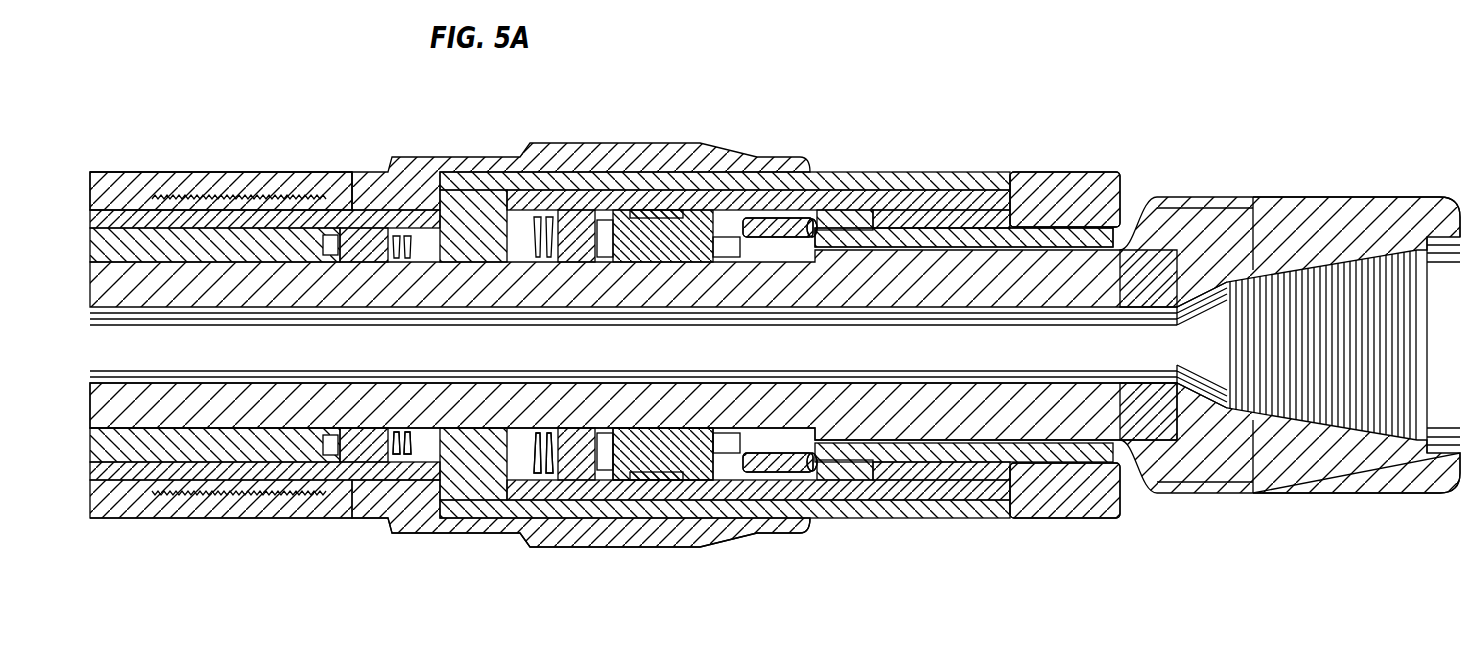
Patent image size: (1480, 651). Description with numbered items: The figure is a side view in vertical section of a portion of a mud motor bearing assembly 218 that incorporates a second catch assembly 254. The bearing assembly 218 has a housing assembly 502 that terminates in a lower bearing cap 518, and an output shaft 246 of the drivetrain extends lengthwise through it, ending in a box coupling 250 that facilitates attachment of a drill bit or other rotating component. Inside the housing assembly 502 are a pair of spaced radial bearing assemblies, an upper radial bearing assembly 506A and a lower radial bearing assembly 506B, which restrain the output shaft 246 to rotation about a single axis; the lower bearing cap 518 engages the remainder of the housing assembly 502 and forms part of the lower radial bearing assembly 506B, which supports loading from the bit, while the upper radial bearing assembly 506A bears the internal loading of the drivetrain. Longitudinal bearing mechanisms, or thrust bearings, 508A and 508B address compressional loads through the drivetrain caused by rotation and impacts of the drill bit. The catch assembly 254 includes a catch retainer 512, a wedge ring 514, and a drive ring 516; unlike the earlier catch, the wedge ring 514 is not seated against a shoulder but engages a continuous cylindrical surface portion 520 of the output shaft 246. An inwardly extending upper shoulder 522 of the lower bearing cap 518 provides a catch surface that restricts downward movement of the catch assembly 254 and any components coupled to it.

The mud motor bearing assembly 218 is at (615, 117).
The upper radial bearing assembly 506A is at (225, 228).
The continuous cylindrical surface portion 520 is at (747, 222).
The catch assembly 254 is at (810, 212).
The inwardly extending upper shoulder 522 is at (833, 215).
The lower bearing cap 518 is at (1068, 192).
The box coupling 250 is at (1343, 218).
The wedge ring 514 is at (777, 445).
The longitudinal bearing mechanism 508A is at (405, 455).
The housing assembly 502 is at (492, 507).
The longitudinal bearing mechanism 508B is at (545, 470).
The catch retainer 512 is at (730, 517).
The drive ring 516 is at (810, 470).
The output shaft 246 is at (945, 427).
The lower radial bearing assembly 506B is at (1052, 468).